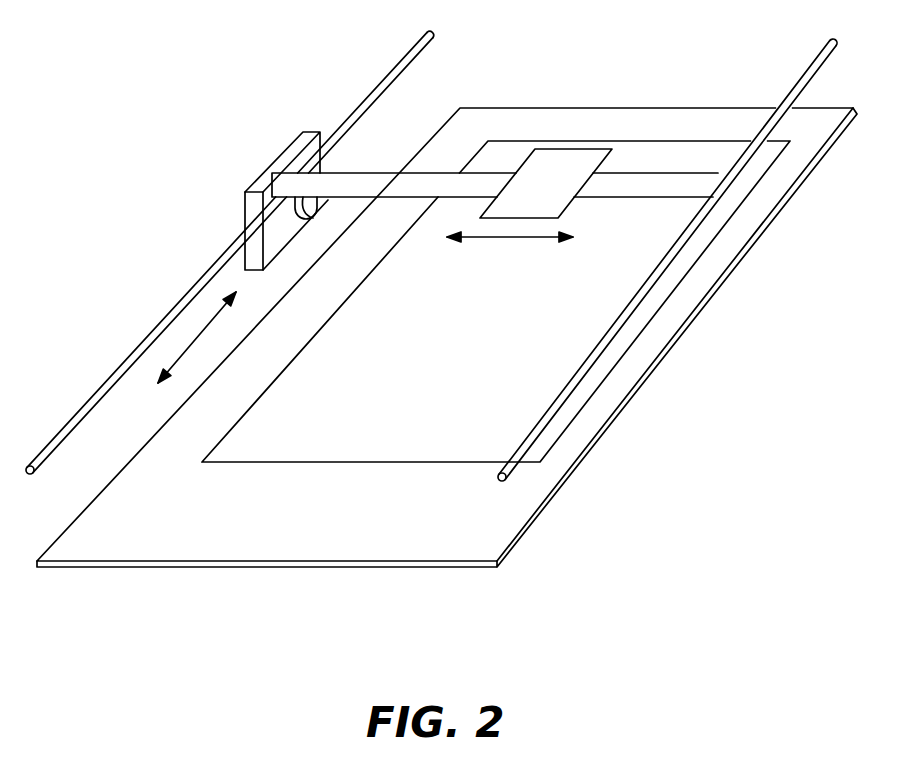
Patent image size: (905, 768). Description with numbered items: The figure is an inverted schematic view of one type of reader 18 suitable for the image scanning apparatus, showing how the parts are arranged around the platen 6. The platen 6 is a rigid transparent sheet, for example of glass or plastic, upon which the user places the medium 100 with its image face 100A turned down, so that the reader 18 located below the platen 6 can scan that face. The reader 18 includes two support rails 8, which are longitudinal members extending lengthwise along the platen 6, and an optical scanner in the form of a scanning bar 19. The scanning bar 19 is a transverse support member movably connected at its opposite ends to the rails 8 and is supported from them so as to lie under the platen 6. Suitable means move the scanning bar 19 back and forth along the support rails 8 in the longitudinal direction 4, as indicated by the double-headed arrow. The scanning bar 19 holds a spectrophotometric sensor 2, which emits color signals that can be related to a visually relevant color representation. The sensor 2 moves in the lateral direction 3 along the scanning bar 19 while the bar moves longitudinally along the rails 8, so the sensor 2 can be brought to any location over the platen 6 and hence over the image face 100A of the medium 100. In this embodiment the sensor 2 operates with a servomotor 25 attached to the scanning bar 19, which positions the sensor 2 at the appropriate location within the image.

The spectrophotometric sensor 2 is at (553, 194).
The lateral direction 3 is at (527, 238).
The longitudinal direction 4 is at (203, 330).
The platen 6 is at (416, 552).
The support rails 8 is at (130, 362).
The reader 18 is at (252, 153).
The scanning bar 19 is at (412, 172).
The servomotor 25 is at (314, 209).
The medium 100 is at (309, 462).
The image face 100A is at (458, 368).